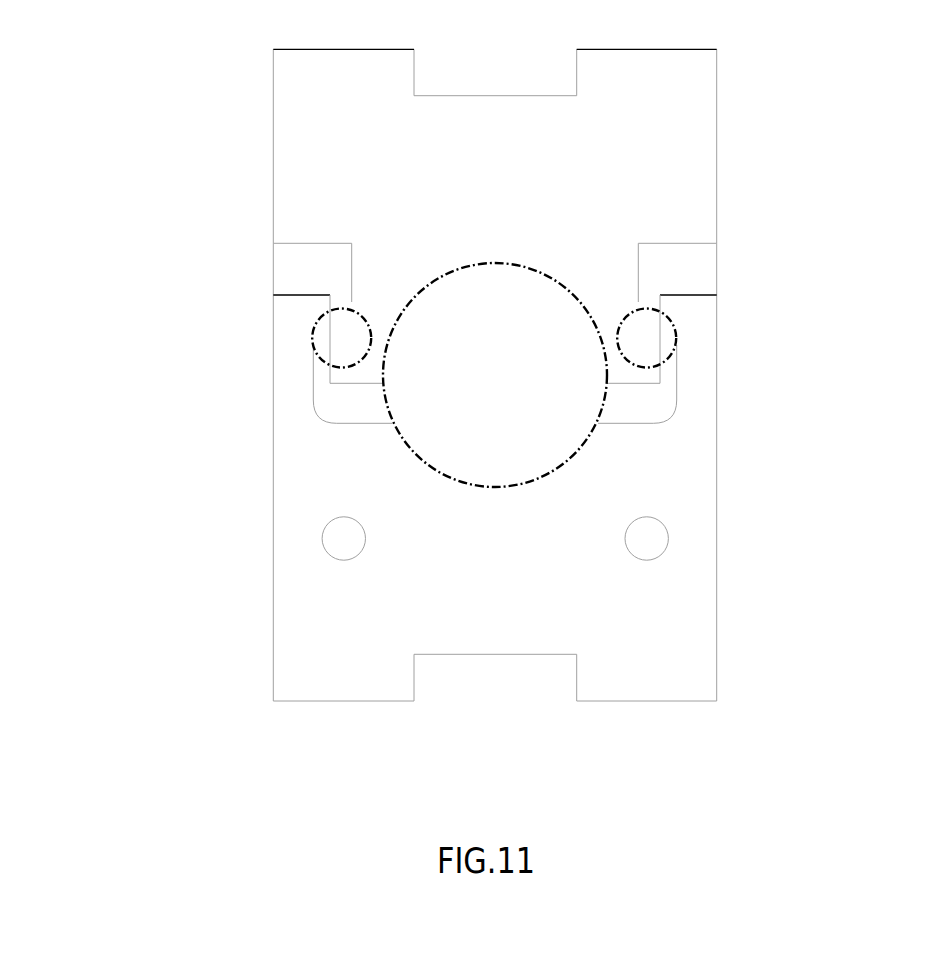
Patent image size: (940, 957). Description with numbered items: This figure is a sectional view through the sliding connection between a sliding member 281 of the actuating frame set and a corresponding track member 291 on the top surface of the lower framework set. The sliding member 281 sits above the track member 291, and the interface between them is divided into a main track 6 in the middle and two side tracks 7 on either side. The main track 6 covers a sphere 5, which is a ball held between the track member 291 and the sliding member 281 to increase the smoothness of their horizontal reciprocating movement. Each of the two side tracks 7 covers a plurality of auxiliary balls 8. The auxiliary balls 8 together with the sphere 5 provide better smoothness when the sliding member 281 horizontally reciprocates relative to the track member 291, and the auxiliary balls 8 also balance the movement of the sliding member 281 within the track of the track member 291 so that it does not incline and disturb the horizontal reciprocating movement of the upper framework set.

The sphere 5 is at (603, 404).
The main track 6 is at (467, 482).
The side track 7 is at (352, 362).
The auxiliary ball 8 is at (342, 307).
The sliding member 281 is at (717, 148).
The track member 291 is at (717, 620).